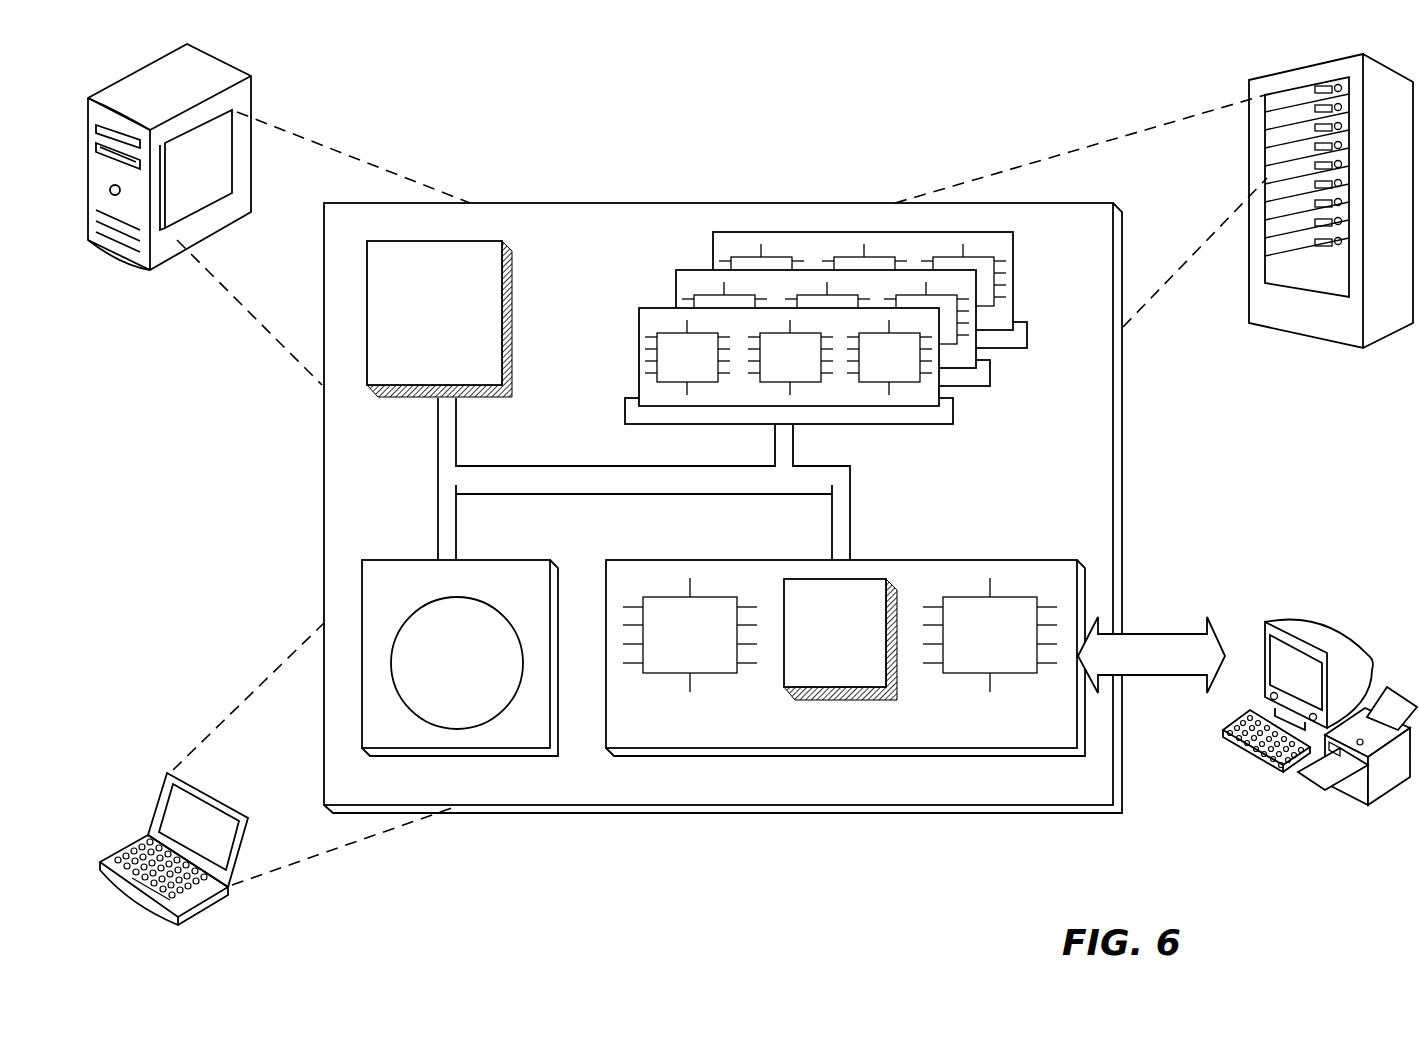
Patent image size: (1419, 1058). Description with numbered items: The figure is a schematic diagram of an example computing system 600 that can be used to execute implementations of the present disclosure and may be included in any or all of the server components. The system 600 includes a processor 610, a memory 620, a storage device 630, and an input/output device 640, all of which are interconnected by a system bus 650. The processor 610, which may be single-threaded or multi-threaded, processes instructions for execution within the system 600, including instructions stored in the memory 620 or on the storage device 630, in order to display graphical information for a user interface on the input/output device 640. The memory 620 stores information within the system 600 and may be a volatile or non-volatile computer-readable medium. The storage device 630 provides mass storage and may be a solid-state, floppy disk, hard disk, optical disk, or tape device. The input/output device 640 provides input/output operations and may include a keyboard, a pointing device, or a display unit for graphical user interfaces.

The computing system 600 is at (535, 114).
The processor 610 is at (439, 319).
The memory 620 is at (1026, 388).
The storage device 630 is at (460, 658).
The input/output device 640 is at (1264, 628).
The system bus 650 is at (641, 490).